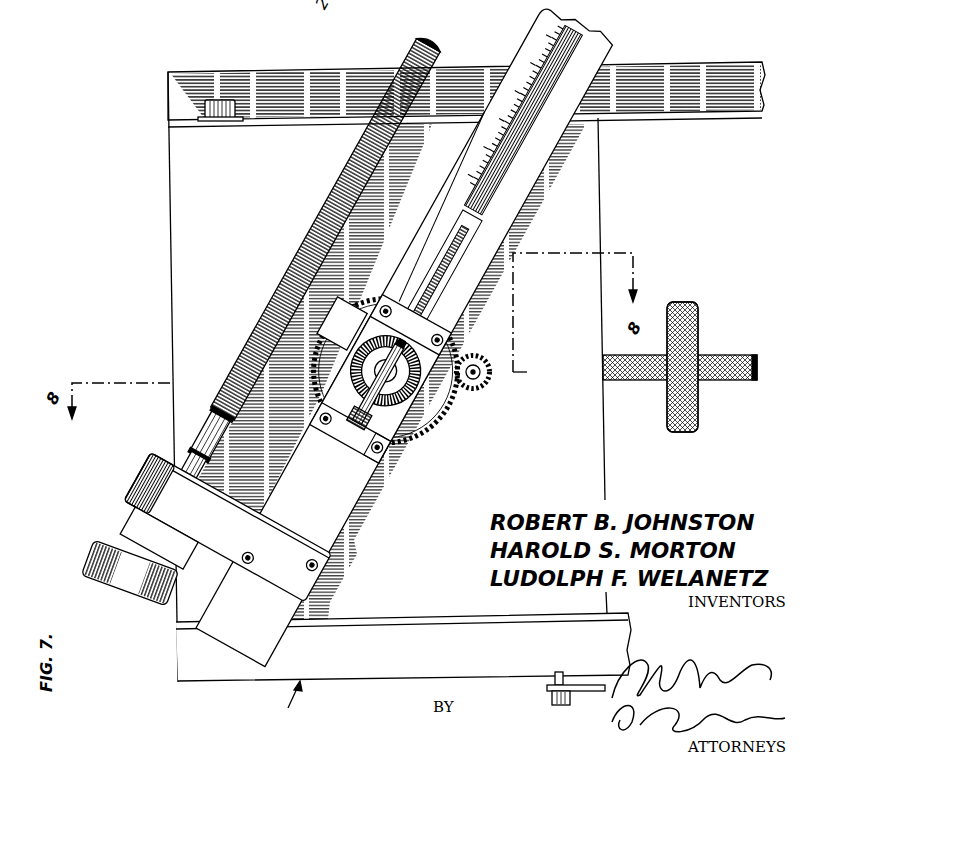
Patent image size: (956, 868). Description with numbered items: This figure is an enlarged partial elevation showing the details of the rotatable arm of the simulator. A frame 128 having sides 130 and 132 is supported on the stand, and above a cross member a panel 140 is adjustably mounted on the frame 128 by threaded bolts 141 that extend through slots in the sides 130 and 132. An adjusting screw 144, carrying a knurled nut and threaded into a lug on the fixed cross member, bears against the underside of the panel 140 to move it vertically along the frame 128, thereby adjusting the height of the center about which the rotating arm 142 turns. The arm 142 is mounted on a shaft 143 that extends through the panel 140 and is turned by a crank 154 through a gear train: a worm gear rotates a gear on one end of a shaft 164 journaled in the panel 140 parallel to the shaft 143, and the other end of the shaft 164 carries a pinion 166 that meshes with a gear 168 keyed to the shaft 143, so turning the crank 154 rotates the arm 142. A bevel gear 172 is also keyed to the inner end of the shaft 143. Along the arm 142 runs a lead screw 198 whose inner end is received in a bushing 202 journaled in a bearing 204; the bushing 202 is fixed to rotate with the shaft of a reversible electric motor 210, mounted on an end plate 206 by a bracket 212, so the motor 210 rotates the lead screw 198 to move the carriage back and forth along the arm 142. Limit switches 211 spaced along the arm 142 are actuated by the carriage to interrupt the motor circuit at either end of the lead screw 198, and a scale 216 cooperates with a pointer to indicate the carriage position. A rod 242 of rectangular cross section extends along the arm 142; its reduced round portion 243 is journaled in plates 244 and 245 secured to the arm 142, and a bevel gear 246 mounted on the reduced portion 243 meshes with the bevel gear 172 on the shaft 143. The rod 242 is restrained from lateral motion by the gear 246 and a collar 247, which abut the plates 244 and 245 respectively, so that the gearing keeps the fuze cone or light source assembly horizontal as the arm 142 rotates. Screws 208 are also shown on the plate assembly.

The frame 128 is at (281, 710).
The side 130 is at (326, 680).
The side 132 is at (260, 71).
The panel 140 is at (266, 207).
The threaded bolts 141 is at (225, 110).
The rotating arm 142 is at (461, 182).
The shaft 143 is at (391, 436).
The adjusting screw 144 is at (722, 358).
The crank 154 is at (580, 690).
The shaft 164 is at (473, 371).
The pinion 166 is at (473, 391).
The gear 168 is at (437, 428).
The bevel gear 172 is at (403, 373).
The lead screw 198 is at (272, 294).
The bushing 202 is at (207, 417).
The bearing 204 is at (183, 450).
The end plate 206 is at (132, 484).
The mounting plate screws 208 is at (254, 558).
The reversible electric motor 210 is at (108, 552).
The limit switches 211 is at (342, 323).
The bracket 212 is at (129, 527).
The scale 216 is at (562, 41).
The rod 242 is at (459, 236).
The reduced round portion 243 is at (357, 412).
The plate 244 is at (350, 306).
The plate 245 is at (359, 439).
The bevel gear 246 is at (452, 370).
The collar 247 is at (362, 419).